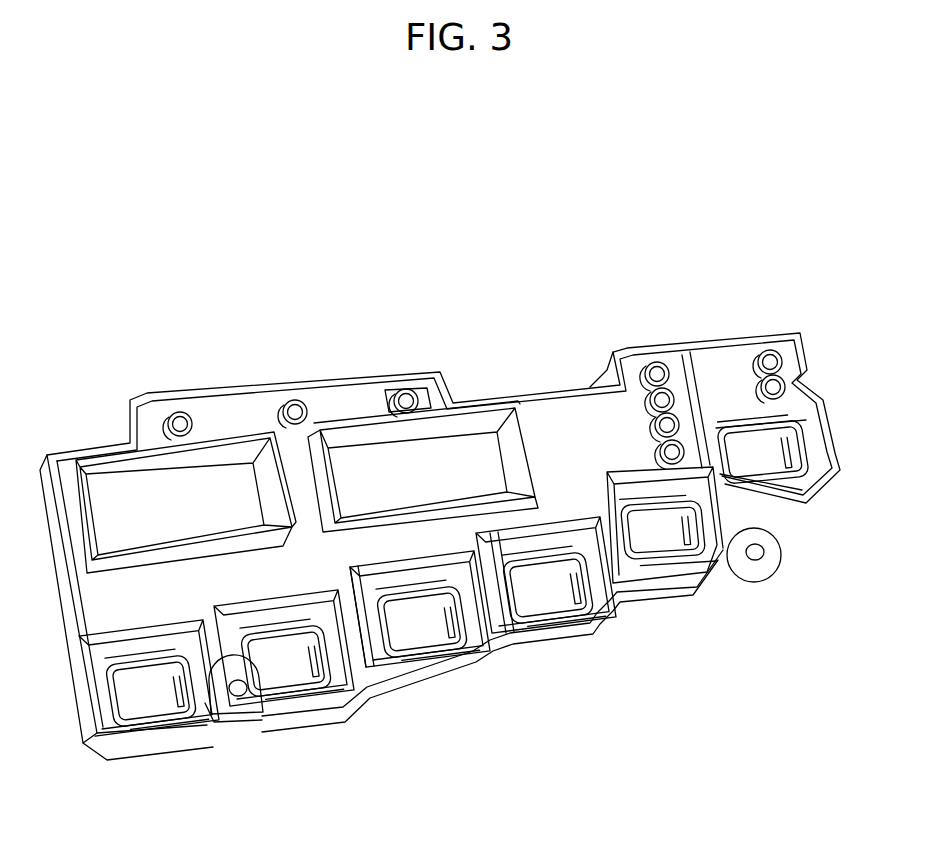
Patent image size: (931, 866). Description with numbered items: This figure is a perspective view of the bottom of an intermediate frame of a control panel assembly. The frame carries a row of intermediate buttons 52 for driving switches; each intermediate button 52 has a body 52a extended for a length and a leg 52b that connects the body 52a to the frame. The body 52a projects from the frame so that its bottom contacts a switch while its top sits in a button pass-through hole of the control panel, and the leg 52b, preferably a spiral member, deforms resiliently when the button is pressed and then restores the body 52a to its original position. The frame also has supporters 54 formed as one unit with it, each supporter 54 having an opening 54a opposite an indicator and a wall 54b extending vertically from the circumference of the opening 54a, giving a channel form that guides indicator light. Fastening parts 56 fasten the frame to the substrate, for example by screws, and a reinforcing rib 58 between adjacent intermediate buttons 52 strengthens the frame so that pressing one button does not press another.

The intermediate button 52 is at (444, 593).
The body 52a is at (547, 597).
The leg 52b is at (570, 633).
The supporter 54 is at (483, 346).
The opening 54a is at (392, 393).
The wall 54b is at (407, 390).
The fastening part 56 is at (236, 712).
The reinforcing rib 58 is at (498, 628).